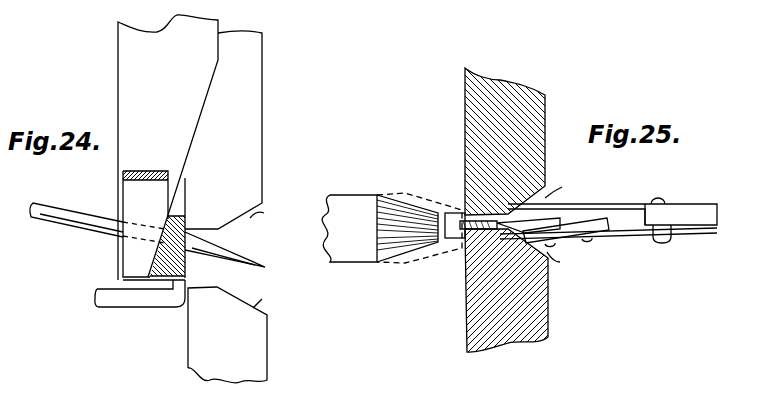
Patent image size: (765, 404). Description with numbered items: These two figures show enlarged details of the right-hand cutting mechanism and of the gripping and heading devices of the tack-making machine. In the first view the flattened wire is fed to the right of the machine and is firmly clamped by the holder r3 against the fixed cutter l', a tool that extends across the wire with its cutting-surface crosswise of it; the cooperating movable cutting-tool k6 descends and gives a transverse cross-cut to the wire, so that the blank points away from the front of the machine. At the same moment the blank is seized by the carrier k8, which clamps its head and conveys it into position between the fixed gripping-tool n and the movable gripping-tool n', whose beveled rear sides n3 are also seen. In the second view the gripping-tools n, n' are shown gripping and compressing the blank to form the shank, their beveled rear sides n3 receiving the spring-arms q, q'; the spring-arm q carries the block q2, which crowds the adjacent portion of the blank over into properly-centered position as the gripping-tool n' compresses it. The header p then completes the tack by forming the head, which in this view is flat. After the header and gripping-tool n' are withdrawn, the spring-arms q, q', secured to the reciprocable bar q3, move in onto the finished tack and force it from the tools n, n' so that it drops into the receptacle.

In FIG. 24, the fixed cutter l' is at (168, 147).
In FIG. 24, the fixed gripping-tool n is at (223, 154).
In FIG. 25, the fixed gripping-tool n is at (503, 141).
In FIG. 24, the movable gripping-tool n' is at (227, 335).
In FIG. 25, the movable gripping-tool n' is at (504, 291).
In FIG. 24, the beveled rear side of gripping-tool n3 is at (271, 256).
In FIG. 25, the beveled rear side of gripping-tool n3 is at (563, 222).
In FIG. 24, the holder r3 is at (102, 224).
In FIG. 24, the carrier k8 is at (186, 221).
In FIG. 24, the movable cutting-tool k6 is at (163, 276).
In FIG. 25, the spring-arm q' is at (612, 199).
In FIG. 25, the spring-arm q is at (608, 245).
In FIG. 25, the block q2 is at (598, 232).
In FIG. 25, the reciprocable bar q3 is at (717, 215).
In FIG. 25, the header p is at (395, 258).